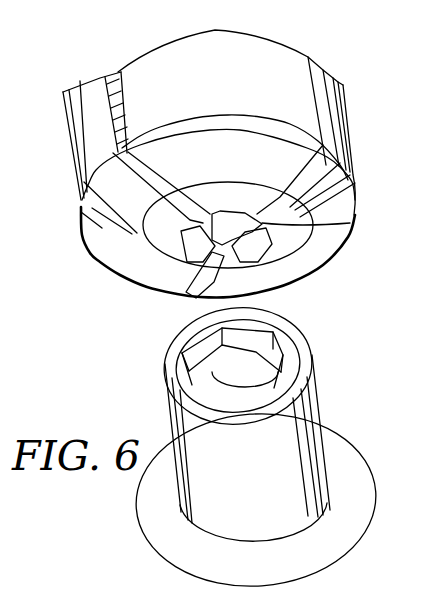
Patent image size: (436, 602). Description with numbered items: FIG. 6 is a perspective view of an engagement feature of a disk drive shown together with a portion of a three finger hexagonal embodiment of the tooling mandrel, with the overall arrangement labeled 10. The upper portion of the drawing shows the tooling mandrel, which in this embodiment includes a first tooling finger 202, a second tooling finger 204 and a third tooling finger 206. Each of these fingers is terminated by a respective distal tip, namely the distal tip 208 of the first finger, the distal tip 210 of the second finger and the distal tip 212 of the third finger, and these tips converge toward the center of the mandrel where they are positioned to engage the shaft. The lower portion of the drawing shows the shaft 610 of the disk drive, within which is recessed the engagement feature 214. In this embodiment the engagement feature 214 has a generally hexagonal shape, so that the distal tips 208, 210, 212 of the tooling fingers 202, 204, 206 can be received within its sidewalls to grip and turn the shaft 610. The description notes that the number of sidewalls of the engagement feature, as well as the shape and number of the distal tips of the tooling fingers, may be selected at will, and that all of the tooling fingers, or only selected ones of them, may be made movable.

The connector assembly 10 is at (177, 213).
The first tooling finger 202 is at (90, 82).
The second tooling finger 204 is at (178, 46).
The third tooling finger 206 is at (350, 207).
The distal tip 208 is at (120, 275).
The distal tip 210 is at (352, 224).
The distal tip 212 is at (322, 263).
The engagement feature 214 is at (252, 383).
The shaft 610 is at (318, 415).